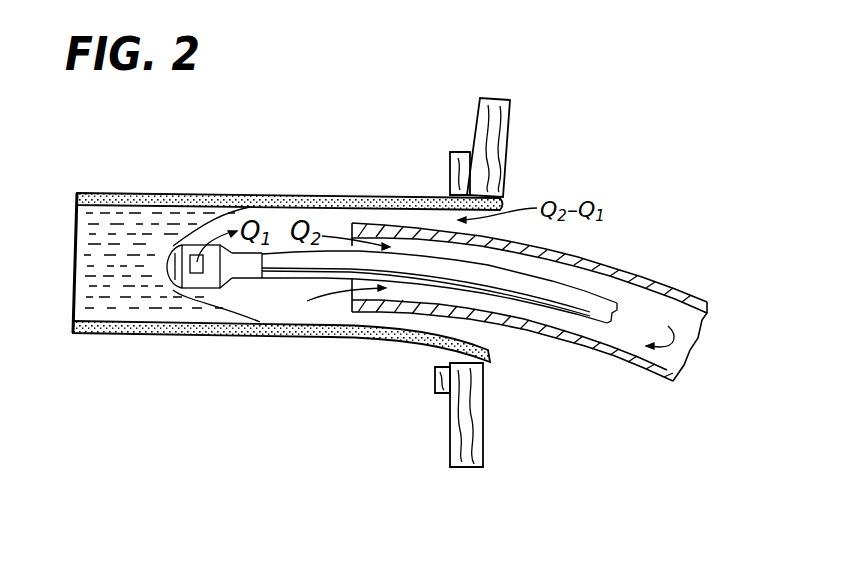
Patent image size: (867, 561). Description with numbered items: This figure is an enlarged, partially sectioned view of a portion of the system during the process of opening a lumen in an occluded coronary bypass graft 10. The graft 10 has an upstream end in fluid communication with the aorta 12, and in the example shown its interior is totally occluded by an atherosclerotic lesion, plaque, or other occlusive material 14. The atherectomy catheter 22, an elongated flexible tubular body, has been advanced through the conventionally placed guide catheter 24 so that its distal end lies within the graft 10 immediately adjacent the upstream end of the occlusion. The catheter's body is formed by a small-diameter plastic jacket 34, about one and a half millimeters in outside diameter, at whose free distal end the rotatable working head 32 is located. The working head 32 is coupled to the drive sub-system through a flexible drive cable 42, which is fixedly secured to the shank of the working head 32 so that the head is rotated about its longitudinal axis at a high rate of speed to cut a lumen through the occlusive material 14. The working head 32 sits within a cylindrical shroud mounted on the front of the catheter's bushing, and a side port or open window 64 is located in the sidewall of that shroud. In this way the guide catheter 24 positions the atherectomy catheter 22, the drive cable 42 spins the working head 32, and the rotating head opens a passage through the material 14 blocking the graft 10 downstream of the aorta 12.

The coronary bypass graft 10 is at (208, 197).
The aorta 12 is at (471, 136).
The occlusive material 14 is at (143, 196).
The atherectomy catheter 22 is at (548, 287).
The guide catheter 24 is at (636, 272).
The working head 32 is at (167, 269).
The jacket 34 is at (281, 253).
The flexible drive cable 42 is at (643, 323).
The side port 64 is at (199, 273).